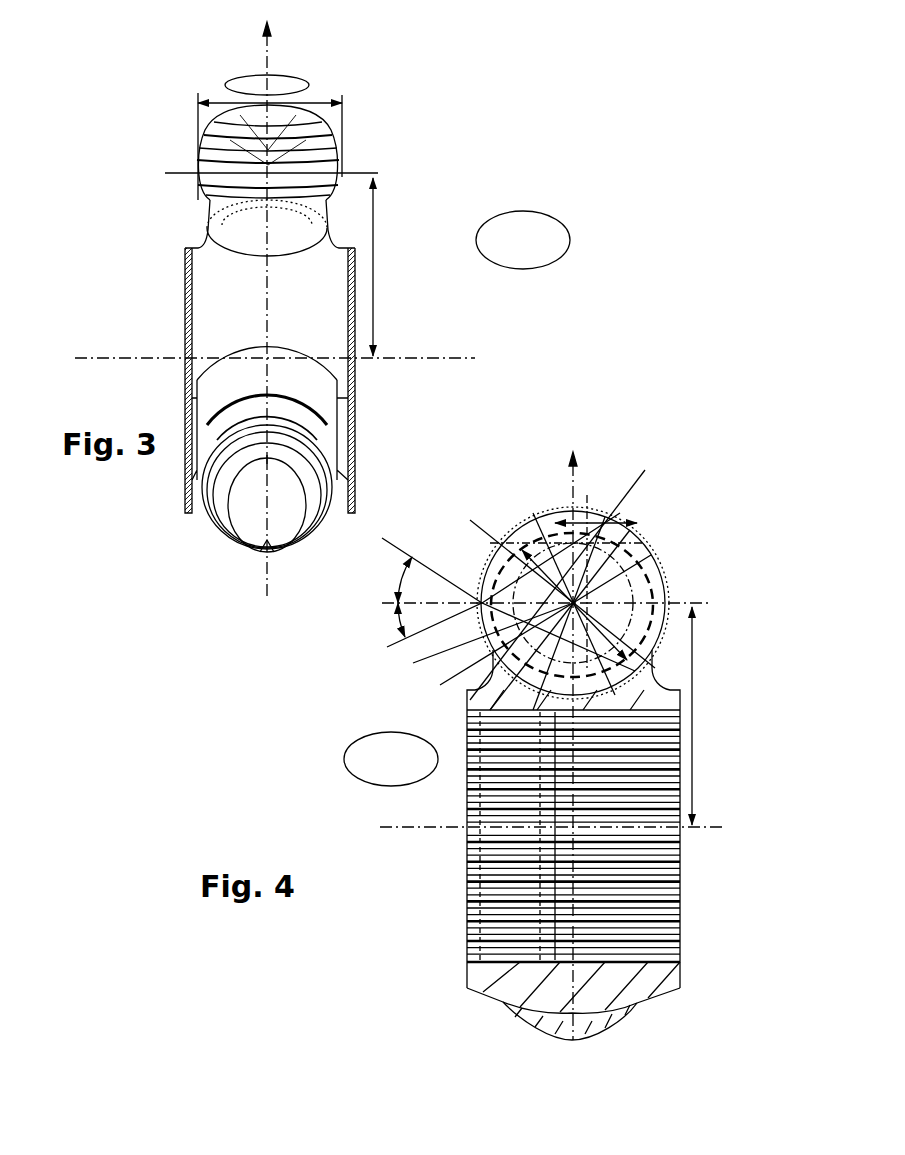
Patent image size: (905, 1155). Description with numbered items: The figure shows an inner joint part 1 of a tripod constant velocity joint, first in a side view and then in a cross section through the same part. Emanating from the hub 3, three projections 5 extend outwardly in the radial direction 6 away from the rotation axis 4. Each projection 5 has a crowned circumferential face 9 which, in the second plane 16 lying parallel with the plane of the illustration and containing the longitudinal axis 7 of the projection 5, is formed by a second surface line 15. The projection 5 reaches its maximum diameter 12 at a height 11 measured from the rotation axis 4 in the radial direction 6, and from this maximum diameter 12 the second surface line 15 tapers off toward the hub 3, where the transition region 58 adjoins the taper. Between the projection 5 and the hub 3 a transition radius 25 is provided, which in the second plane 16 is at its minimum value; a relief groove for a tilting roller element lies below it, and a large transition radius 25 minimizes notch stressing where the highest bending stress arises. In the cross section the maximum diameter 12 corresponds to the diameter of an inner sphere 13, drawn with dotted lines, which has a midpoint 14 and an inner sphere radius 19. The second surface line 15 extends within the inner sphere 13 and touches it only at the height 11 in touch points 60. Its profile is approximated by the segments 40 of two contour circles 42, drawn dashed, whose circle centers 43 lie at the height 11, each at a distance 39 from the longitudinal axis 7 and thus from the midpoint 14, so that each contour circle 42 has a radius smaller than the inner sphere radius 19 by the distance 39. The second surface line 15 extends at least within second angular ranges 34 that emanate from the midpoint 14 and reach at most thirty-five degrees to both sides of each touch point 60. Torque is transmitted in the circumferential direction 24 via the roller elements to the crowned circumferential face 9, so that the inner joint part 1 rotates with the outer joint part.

In FIG. 3, the inner joint part 1 is at (422, 193).
In FIG. 4, the inner joint part 1 is at (705, 693).
In FIG. 3, the hub 3 is at (200, 282).
In FIG. 4, the hub 3 is at (537, 973).
In FIG. 3, the rotation axis 4 is at (285, 361).
In FIG. 4, the rotation axis 4 is at (569, 724).
In FIG. 3, the projection 5 is at (245, 510).
In FIG. 4, the projection 5 is at (490, 556).
In FIG. 3, the radial direction 6 is at (262, 44).
In FIG. 4, the radial direction 6 is at (566, 472).
In FIG. 3, the longitudinal axis 7 is at (311, 74).
In FIG. 4, the longitudinal axis 7 is at (582, 506).
In FIG. 3, the crowned circumferential face 9 is at (313, 130).
In FIG. 4, the crowned circumferential face 9 is at (518, 548).
In FIG. 3, the height 11 is at (373, 298).
In FIG. 4, the height 11 is at (692, 772).
In FIG. 3, the maximum diameter 12 is at (320, 97).
In FIG. 4, the maximum diameter 12 is at (486, 570).
In FIG. 4, the inner sphere 13 is at (650, 532).
In FIG. 4, the midpoint 14 is at (436, 650).
In FIG. 3, the second surface line 15 is at (325, 148).
In FIG. 4, the second surface line 15 is at (655, 540).
In FIG. 3, the second plane 16 is at (523, 240).
In FIG. 4, the second plane 16 is at (391, 759).
In FIG. 4, the inner sphere radius 19 is at (533, 635).
In FIG. 3, the circumferential direction 24 is at (243, 80).
In FIG. 3, the transition radius 25 is at (205, 220).
In FIG. 4, the second angular range 34 is at (500, 610).
In FIG. 4, the distance 39 is at (645, 470).
In FIG. 4, the segment 40 is at (657, 554).
In FIG. 4, the contour circle 42 is at (640, 622).
In FIG. 4, the circle center 43 is at (655, 577).
In FIG. 3, the transition region 58 is at (222, 228).
In FIG. 4, the touch point 60 is at (398, 603).